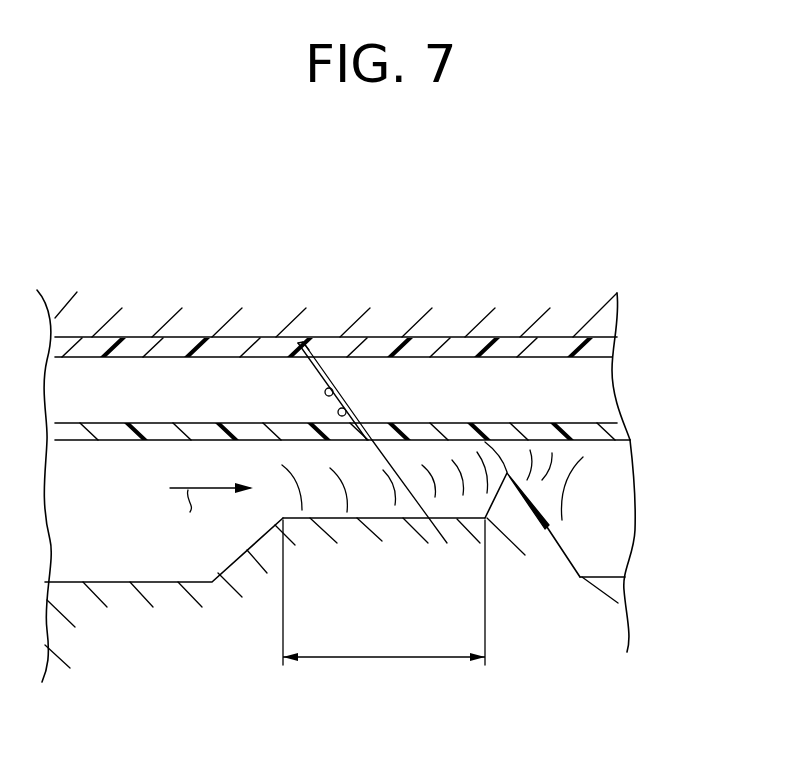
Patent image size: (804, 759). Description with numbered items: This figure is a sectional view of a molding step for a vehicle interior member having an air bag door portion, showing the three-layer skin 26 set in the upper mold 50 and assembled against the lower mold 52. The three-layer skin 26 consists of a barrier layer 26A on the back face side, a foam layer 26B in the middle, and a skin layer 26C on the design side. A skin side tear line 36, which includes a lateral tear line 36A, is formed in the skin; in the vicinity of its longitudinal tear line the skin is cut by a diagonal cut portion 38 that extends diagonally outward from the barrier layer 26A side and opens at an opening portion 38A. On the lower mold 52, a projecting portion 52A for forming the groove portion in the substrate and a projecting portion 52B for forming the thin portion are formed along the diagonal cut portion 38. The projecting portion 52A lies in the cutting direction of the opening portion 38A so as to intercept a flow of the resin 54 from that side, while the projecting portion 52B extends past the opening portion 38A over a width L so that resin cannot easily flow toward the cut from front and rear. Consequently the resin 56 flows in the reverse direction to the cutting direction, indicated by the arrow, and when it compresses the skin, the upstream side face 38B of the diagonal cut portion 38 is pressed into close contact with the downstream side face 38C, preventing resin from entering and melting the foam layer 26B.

The three-layer skin 26 is at (417, 388).
The barrier layer 26A is at (618, 433).
The foam layer 26B is at (598, 385).
The skin layer 26C is at (608, 352).
The skin side tear line 36 is at (298, 343).
The lateral tear line 36A is at (312, 348).
The diagonal cut portion 38 is at (363, 415).
The opening portion 38A is at (425, 508).
The side face on upstream side 38B is at (330, 390).
The side face on downstream side 38C is at (336, 380).
The upper mold 50 is at (610, 318).
The lower mold 52 is at (598, 613).
The projecting portion 52A is at (545, 526).
The projecting portion 52B is at (368, 517).
The resin 54 is at (610, 495).
The resin 56 is at (133, 553).